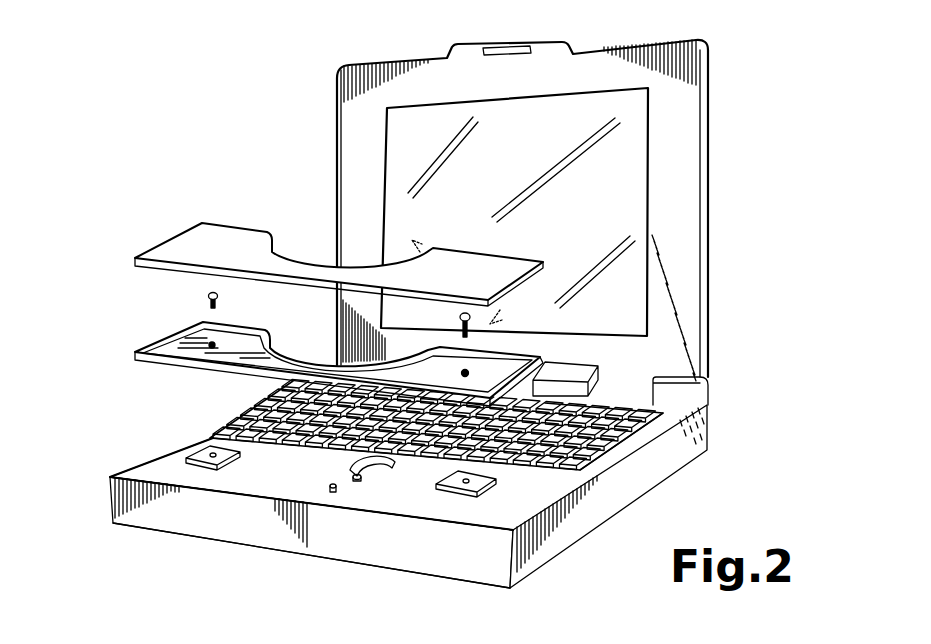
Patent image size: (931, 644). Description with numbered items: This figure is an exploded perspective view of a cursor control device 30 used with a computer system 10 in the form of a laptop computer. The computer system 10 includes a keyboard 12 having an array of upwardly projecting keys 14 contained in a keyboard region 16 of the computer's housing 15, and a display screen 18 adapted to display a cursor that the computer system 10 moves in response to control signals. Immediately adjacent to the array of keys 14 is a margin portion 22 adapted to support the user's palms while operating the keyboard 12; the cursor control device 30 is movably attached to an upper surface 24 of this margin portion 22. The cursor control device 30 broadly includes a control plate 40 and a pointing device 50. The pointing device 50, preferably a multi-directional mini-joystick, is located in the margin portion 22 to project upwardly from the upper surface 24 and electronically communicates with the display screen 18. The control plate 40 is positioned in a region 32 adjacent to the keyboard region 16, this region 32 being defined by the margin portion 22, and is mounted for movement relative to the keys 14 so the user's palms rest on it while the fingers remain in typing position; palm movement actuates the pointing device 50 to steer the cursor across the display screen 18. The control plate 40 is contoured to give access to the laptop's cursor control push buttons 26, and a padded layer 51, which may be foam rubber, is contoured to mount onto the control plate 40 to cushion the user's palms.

The computer system 10 is at (592, 210).
The keyboard 12 is at (265, 412).
The keys 14 is at (605, 415).
The housing 15 is at (710, 450).
The keyboard region 16 is at (560, 400).
The display screen 18 is at (621, 172).
The margin portion 22 is at (426, 494).
The upper surface 24 is at (525, 498).
The push buttons 26 is at (350, 473).
The cursor control device 30 is at (117, 413).
The region 32 is at (178, 551).
The control plate 40 is at (172, 338).
The pointing device 50 is at (333, 493).
The padded layer 51 is at (225, 243).